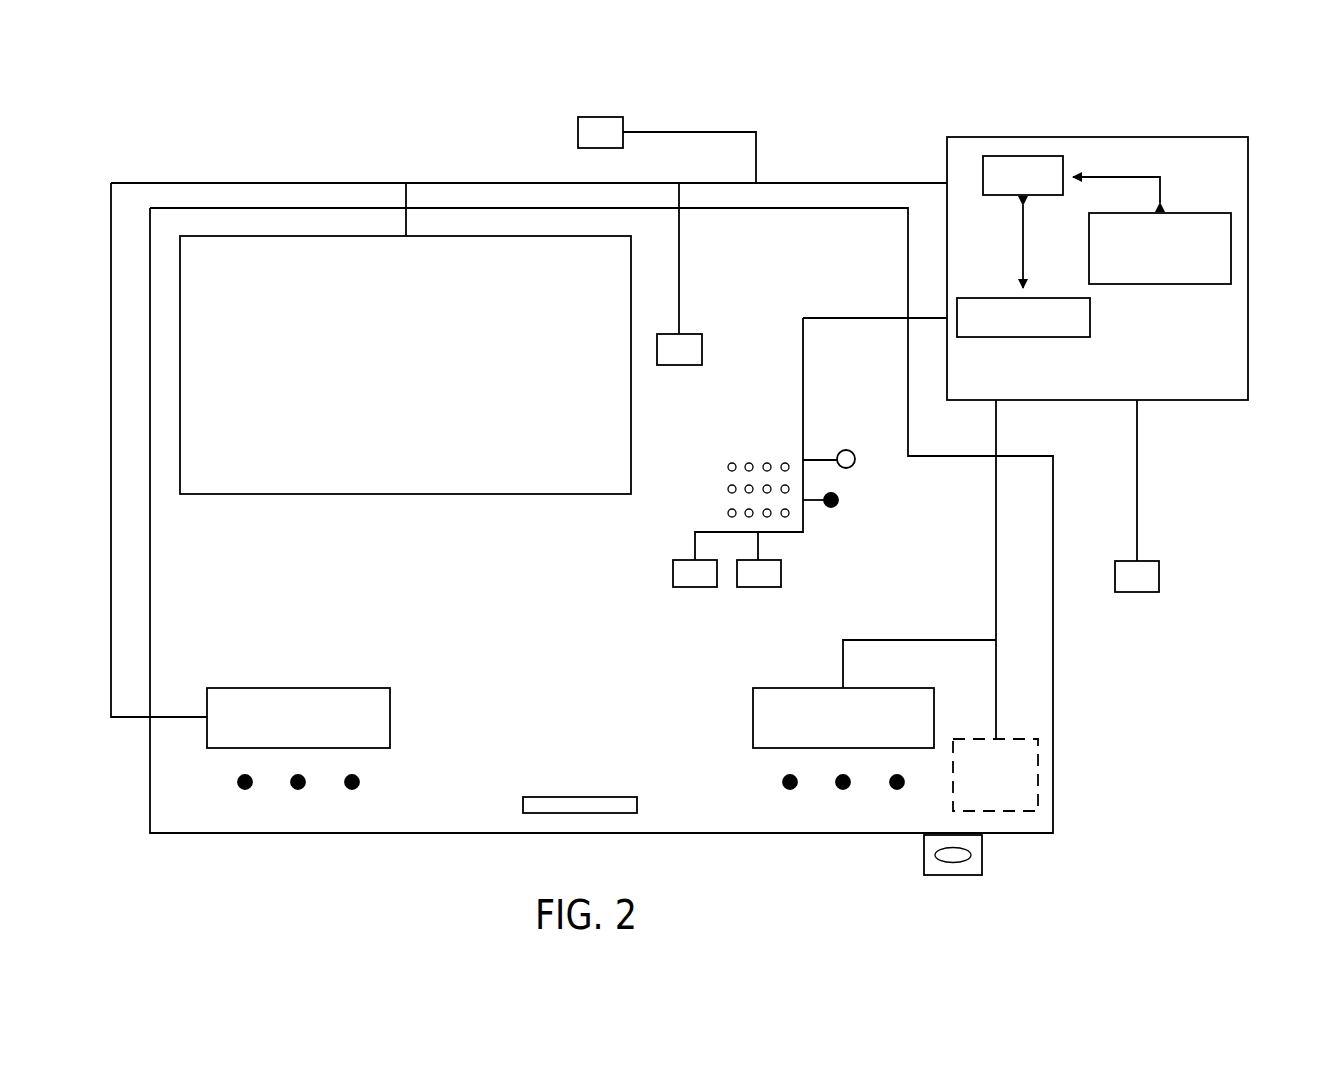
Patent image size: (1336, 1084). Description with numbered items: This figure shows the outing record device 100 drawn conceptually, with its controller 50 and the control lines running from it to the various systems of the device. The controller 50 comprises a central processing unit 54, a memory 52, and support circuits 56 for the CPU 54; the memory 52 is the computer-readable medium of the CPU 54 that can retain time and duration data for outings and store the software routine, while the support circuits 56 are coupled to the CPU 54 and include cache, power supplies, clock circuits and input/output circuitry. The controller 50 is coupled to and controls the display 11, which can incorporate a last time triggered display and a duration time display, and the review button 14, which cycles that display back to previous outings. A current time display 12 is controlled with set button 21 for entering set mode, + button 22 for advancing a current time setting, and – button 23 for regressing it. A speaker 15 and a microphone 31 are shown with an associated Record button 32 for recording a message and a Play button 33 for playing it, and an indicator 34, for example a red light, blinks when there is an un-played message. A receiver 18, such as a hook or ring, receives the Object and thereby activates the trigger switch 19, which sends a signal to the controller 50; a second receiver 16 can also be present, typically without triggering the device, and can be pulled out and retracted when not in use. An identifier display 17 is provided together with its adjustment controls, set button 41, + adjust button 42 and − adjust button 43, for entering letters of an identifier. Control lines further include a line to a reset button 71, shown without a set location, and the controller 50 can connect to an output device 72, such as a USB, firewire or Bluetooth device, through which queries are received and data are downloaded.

The outing record device 100 is at (1147, 660).
The display 11 is at (418, 495).
The current time display 12 is at (390, 715).
The review button 14 is at (702, 348).
The speaker 15 is at (728, 490).
The second receiver 16 is at (637, 803).
The identifier display 17 is at (753, 717).
The receiver 18 is at (982, 855).
The trigger switch 19 is at (1038, 775).
The set button 21 is at (245, 789).
The + button 22 is at (298, 789).
The – button 23 is at (352, 789).
The microphone 31 is at (838, 500).
The Record button 32 is at (695, 587).
The Play button 33 is at (758, 587).
The indicator 34 is at (844, 449).
The set button 41 is at (790, 789).
The + adjust button 42 is at (843, 789).
The − adjust button 43 is at (897, 789).
The controller 50 is at (1248, 348).
The memory 52 is at (1090, 318).
The central processing unit 54 is at (1023, 155).
The support circuits 56 is at (1231, 232).
The reset button 71 is at (575, 130).
The output device 72 is at (1159, 575).